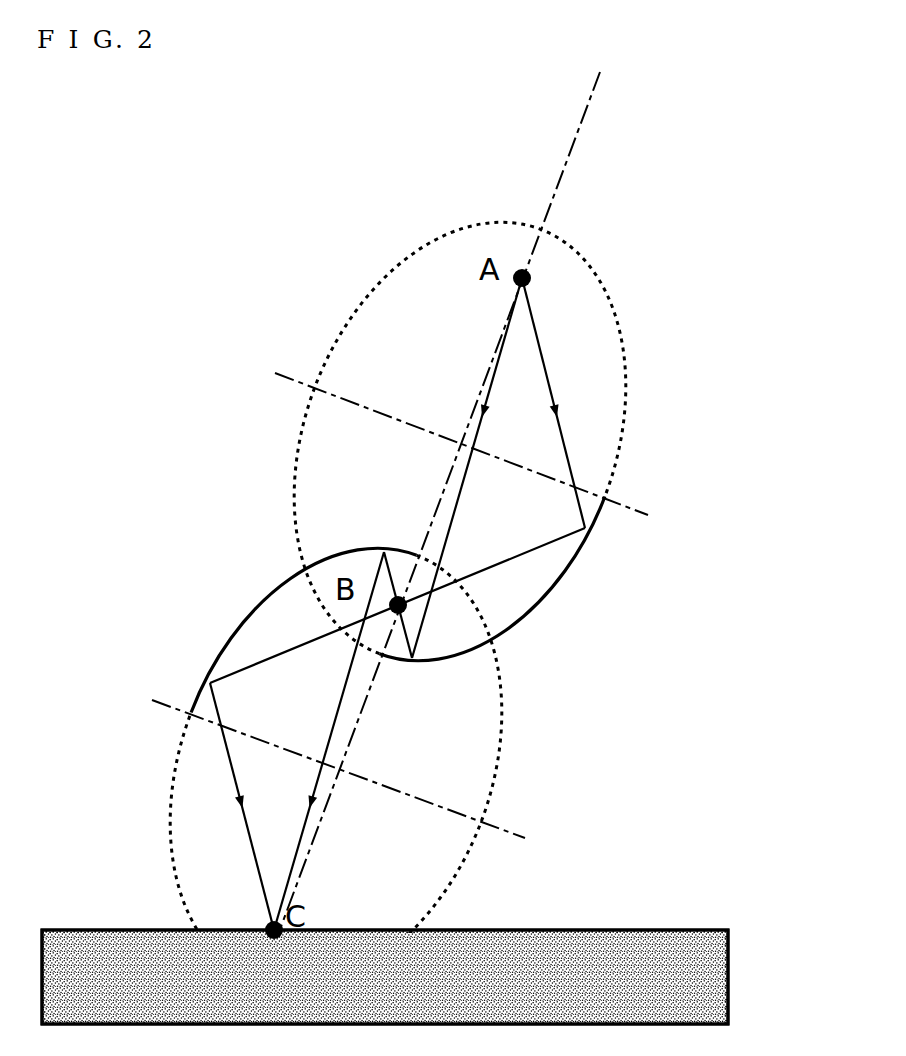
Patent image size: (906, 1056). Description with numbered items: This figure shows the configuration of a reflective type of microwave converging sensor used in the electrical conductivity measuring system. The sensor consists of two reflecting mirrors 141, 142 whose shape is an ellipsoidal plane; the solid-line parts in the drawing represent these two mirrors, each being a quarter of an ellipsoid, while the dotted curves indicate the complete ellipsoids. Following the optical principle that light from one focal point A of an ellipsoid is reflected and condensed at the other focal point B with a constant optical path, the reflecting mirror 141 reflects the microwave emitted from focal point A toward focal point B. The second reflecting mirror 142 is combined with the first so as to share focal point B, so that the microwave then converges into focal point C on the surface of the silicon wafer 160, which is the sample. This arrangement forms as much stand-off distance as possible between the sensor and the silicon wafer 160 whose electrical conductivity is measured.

The reflecting mirror 141 is at (523, 615).
The reflecting mirror 142 is at (253, 615).
The silicon wafer 160 is at (595, 940).